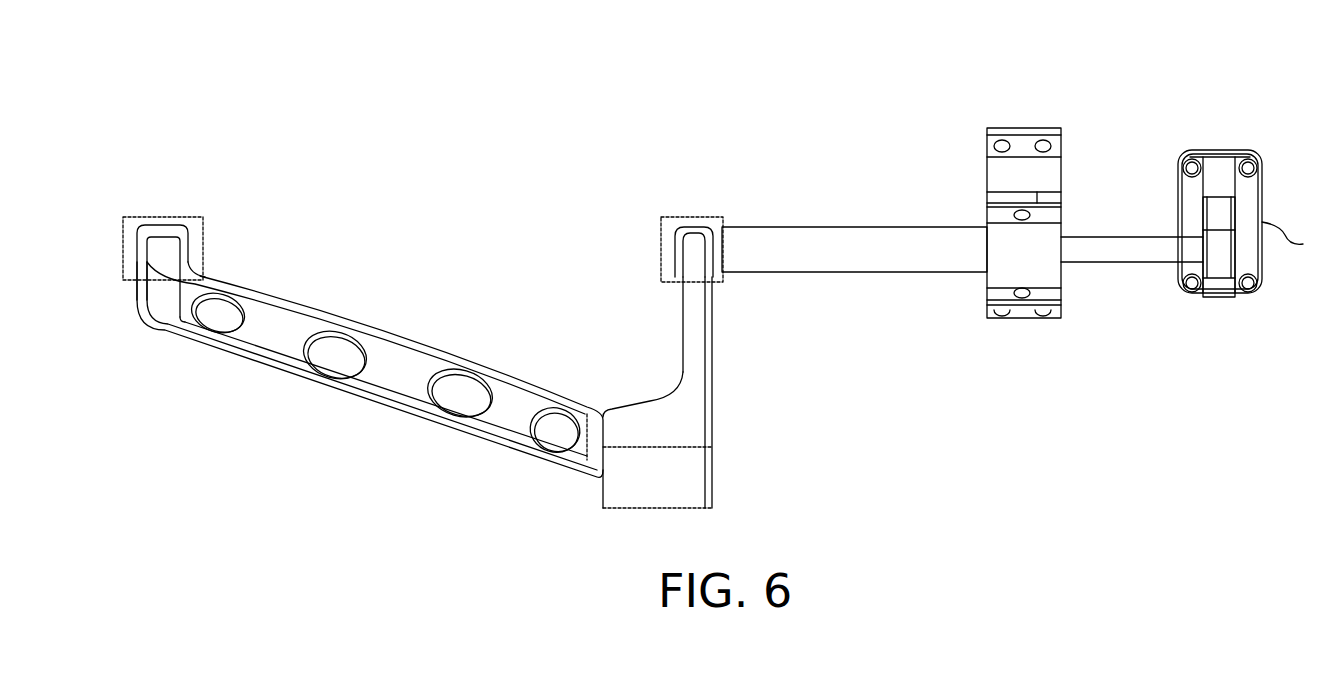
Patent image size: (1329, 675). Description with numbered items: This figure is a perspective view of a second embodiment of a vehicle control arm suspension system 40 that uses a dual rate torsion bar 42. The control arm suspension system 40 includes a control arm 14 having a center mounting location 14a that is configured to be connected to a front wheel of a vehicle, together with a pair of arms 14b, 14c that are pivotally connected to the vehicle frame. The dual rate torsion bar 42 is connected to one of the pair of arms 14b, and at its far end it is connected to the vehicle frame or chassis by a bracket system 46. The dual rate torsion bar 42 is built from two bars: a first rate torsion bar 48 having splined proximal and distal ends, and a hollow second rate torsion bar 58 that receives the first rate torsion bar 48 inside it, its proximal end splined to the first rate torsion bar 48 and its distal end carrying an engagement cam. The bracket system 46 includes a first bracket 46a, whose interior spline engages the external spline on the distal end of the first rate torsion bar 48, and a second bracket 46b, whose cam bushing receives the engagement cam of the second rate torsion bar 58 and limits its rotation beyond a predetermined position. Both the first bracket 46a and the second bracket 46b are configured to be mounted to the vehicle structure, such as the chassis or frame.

The control arm 14 is at (399, 334).
The center mounting location 14a is at (653, 491).
The arm 14b is at (673, 228).
The arm 14c is at (162, 224).
The vehicle control arm suspension system 40 is at (738, 110).
The dual rate torsion bar 42 is at (854, 232).
The bracket system 46 is at (1268, 147).
The first bracket 46a is at (1295, 240).
The second bracket 46b is at (1027, 128).
The first rate torsion bar 48 is at (1115, 251).
The second rate torsion bar 58 is at (827, 258).